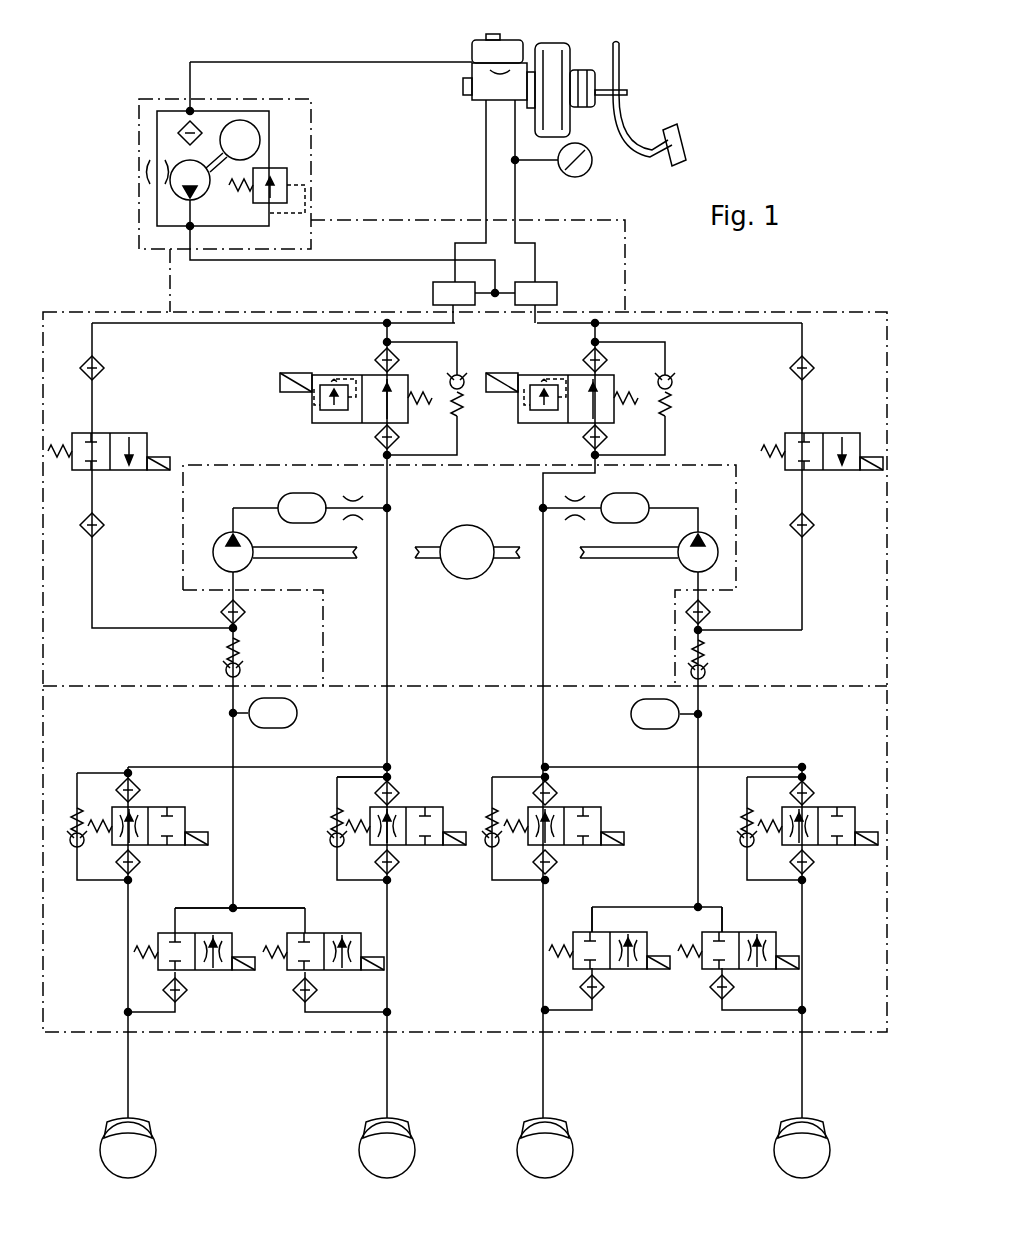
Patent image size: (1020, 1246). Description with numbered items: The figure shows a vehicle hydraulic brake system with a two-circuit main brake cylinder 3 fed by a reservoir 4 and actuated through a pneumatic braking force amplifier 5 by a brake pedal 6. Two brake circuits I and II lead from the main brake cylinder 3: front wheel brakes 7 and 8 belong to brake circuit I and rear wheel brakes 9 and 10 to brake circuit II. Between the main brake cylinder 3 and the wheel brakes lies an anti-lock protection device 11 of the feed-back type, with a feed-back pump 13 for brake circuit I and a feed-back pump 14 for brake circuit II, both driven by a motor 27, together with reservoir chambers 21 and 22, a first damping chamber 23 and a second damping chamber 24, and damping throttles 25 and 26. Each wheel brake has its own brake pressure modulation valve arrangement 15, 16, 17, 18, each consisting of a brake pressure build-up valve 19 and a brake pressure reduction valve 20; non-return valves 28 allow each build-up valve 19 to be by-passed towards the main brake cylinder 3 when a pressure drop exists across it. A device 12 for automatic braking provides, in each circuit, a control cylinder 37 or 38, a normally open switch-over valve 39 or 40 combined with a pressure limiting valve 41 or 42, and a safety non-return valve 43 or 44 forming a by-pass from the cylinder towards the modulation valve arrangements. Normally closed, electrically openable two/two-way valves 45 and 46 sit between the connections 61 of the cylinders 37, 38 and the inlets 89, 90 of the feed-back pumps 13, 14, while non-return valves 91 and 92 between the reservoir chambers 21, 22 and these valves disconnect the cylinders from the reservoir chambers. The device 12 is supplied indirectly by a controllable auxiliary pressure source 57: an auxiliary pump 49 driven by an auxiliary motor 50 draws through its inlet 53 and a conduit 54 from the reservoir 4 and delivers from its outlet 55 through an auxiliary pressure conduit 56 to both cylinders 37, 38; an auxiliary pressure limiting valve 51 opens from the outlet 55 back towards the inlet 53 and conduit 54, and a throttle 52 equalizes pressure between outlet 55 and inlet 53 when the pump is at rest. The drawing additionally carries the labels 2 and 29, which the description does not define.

The hydraulic supply unit 2 is at (125, 88).
The main brake cylinder 3 is at (468, 88).
The reservoir 4 is at (478, 40).
The pneumatic braking force amplifier 5 is at (550, 45).
The brake pedal 6 is at (678, 130).
The front wheel brake 7 is at (560, 1125).
The front wheel brake 8 is at (787, 1125).
The rear wheel brake 9 is at (145, 1125).
The rear wheel brake 10 is at (370, 1125).
The anti-lock protection device 11 is at (505, 1040).
The device for automatic braking 12 is at (307, 298).
The feed-back pump 13 is at (685, 565).
The feed-back pump 14 is at (240, 570).
The brake pressure modulation valve arrangement 15 is at (625, 924).
The brake pressure modulation valve arrangement 16 is at (727, 924).
The brake pressure modulation valve arrangement 17 is at (165, 924).
The brake pressure modulation valve arrangement 18 is at (400, 900).
The brake pressure build-up valve 19 is at (130, 807).
The brake pressure reduction valve 20 is at (290, 975).
The reservoir chamber 21 is at (635, 706).
The reservoir chamber 22 is at (298, 713).
The first damping chamber 23 is at (640, 498).
The second damping chamber 24 is at (282, 498).
The damping throttle 25 is at (577, 512).
The damping throttle 26 is at (353, 506).
The motor 27 is at (472, 527).
The non-return valve 28 is at (75, 850).
The inlet valve 29 is at (530, 820).
The control cylinder 37 is at (552, 282).
The control cylinder 38 is at (445, 282).
The switch-over valve 39 is at (590, 378).
The switch-over valve 40 is at (366, 374).
The pressure limiting valve 41 is at (553, 415).
The pressure limiting valve 42 is at (318, 405).
The non-return valve 43 is at (675, 385).
The non-return valve 44 is at (464, 380).
The 2/2-way valve 45 is at (808, 433).
The 2/2-way valve 46 is at (105, 433).
The auxiliary pump 49 is at (178, 188).
The auxiliary motor 50 is at (258, 125).
The auxiliary pressure limiting valve 51 is at (272, 170).
The throttle 52 is at (150, 170).
The inlet 53 is at (185, 165).
The conduit 54 is at (232, 62).
The outlet 55 is at (188, 215).
The auxiliary pressure conduit 56 is at (228, 262).
The controllable auxiliary pressure source 57 is at (135, 183).
The connection 61 is at (455, 318).
The inlet 89 is at (708, 604).
The inlet 90 is at (222, 605).
The non-return valve 91 is at (706, 672).
The non-return valve 92 is at (225, 668).
The brake circuit I is at (516, 190).
The brake circuit II is at (486, 178).